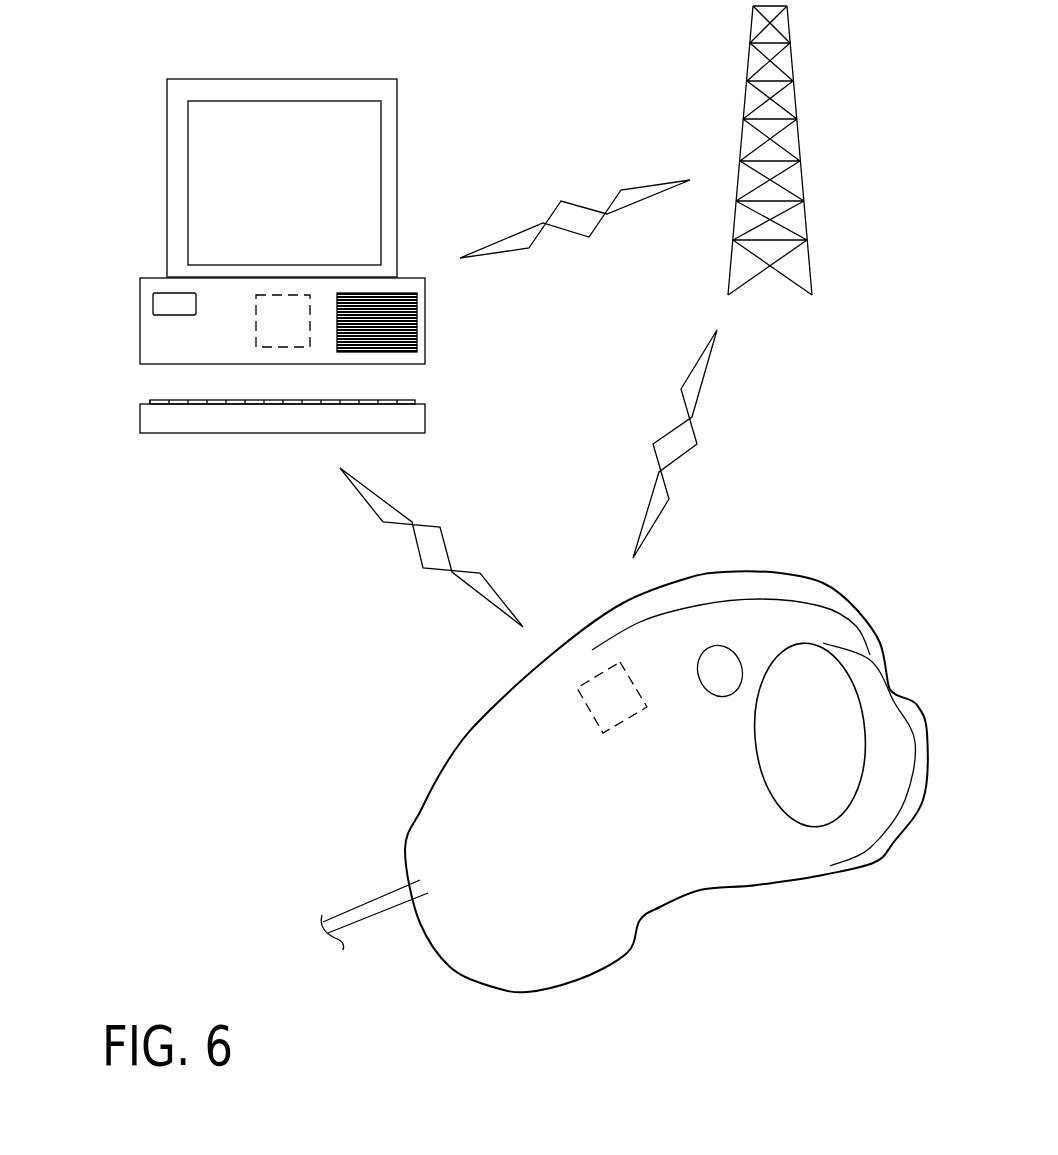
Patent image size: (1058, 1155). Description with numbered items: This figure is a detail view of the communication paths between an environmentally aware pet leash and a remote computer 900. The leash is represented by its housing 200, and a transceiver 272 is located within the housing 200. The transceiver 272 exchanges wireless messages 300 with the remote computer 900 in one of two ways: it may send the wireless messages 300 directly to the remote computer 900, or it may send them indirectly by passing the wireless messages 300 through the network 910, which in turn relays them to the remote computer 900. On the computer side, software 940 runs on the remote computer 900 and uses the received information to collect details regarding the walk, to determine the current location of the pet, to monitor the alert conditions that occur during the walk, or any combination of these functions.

The remote computer 900 is at (140, 312).
The software 940 is at (255, 341).
The network 910 is at (795, 99).
The wireless messages 300 is at (590, 203).
The housing 200 is at (603, 920).
The transceiver 272 is at (588, 706).